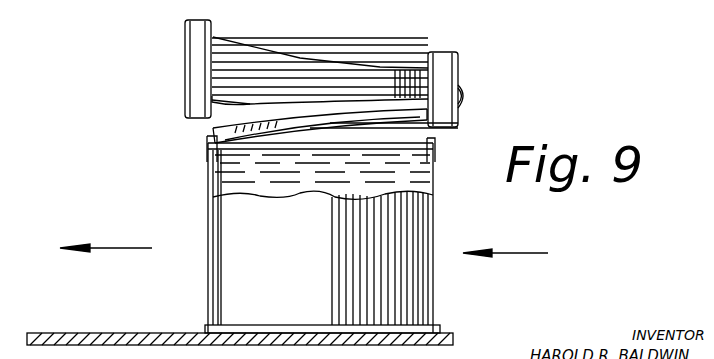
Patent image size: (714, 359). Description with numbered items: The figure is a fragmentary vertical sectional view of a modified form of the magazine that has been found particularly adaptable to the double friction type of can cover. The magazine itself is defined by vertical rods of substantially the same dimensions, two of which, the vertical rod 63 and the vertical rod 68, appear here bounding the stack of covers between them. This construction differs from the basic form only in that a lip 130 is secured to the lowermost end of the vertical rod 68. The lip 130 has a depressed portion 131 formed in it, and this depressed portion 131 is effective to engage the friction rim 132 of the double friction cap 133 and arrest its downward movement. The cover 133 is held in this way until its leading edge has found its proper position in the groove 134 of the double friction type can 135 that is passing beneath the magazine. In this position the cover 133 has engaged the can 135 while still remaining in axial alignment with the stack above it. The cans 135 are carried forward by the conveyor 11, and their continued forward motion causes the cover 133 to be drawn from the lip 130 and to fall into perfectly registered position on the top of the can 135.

The conveyor 11 is at (78, 333).
The vertical rod 63 is at (186, 70).
The vertical rod 68 is at (458, 58).
The lip 130 is at (462, 110).
The depressed portion 131 is at (458, 128).
The friction rim 132 is at (462, 92).
The double friction cap 133 is at (272, 127).
The groove 134 is at (210, 162).
The double friction type can 135 is at (208, 213).